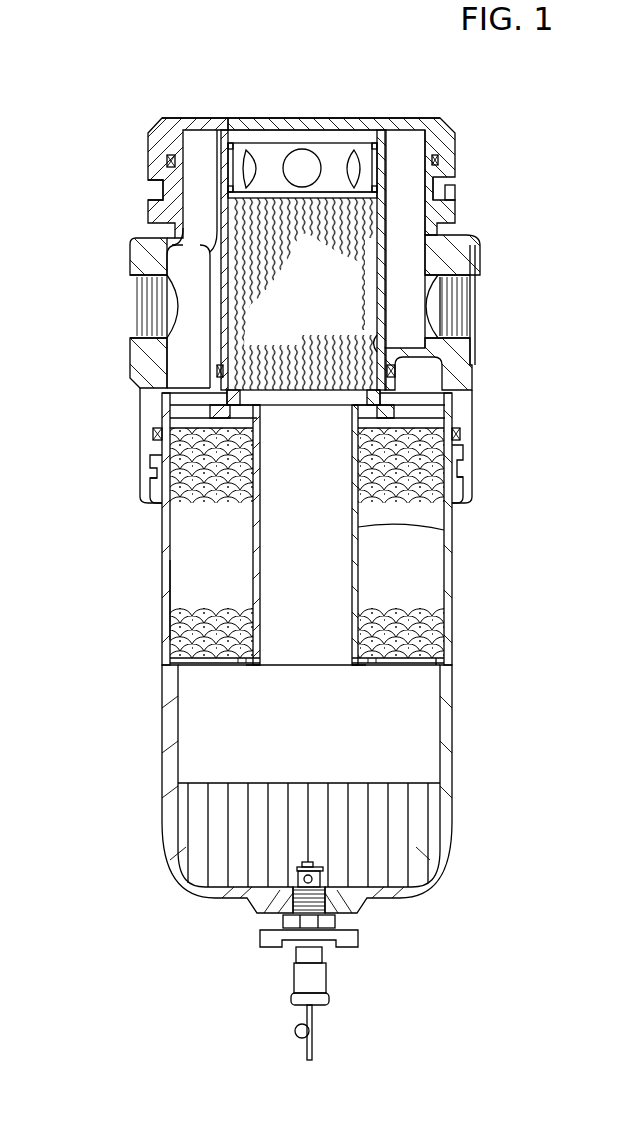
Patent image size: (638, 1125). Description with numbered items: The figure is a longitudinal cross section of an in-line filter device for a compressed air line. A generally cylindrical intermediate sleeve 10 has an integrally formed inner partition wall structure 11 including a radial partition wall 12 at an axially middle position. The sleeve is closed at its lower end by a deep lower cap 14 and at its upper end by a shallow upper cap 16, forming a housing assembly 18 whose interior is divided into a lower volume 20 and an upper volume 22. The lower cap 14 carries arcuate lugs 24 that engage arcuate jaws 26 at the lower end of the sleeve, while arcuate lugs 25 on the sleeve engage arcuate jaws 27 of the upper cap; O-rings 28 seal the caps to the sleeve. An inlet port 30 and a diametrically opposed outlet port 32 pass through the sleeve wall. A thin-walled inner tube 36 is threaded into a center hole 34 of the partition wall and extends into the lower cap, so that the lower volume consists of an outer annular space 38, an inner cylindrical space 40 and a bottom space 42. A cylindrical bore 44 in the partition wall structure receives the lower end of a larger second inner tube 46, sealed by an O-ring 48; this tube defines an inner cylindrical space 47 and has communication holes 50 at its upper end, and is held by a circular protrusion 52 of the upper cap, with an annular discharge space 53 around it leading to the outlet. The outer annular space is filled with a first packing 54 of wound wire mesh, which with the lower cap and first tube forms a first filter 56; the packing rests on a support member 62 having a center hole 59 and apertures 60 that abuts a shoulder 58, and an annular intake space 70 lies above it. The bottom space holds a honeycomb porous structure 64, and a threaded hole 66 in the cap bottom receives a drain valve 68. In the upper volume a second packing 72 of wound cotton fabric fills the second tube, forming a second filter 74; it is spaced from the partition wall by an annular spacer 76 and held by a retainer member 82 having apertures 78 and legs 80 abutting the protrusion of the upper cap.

The intermediate sleeve 10 is at (125, 252).
The inner partition wall structure 11 is at (200, 363).
The radial partition wall 12 is at (160, 405).
The lower cap 14 is at (160, 698).
The upper cap 16 is at (455, 130).
The housing assembly 18 is at (88, 208).
The lower volume 20 is at (405, 720).
The upper volume 22 is at (203, 162).
The arcuate lugs 24 is at (150, 470).
The arcuate lugs 25 is at (163, 188).
The arcuate jaws 26 is at (150, 495).
The arcuate jaws 27 is at (163, 212).
The O-rings 28 is at (440, 165).
The inlet port 30 is at (150, 345).
The outlet port 32 is at (458, 332).
The threaded center hole 34 is at (260, 407).
The inner tube 36 is at (444, 530).
The outer annular space 38 is at (198, 559).
The inner cylindrical space 40 is at (291, 542).
The bottom space 42 is at (296, 757).
The cylindrical bore 44 is at (472, 330).
The second inner tube 46 is at (457, 298).
The inner cylindrical space 47 is at (286, 304).
The O-ring 48 is at (398, 386).
The communication holes 50 is at (230, 147).
The circular protrusion 52 is at (345, 150).
The annular discharge space 53 is at (405, 130).
The first packing 54 is at (430, 605).
The first filter 56 is at (165, 607).
The shoulder 58 is at (172, 658).
The circular center hole 59 is at (260, 660).
The apertures 60 is at (242, 660).
The support member 62 is at (442, 665).
The porous structure 64 is at (398, 778).
The threaded hole 66 is at (262, 898).
The drain valve 68 is at (330, 984).
The annular intake space 70 is at (447, 364).
The second packing 72 is at (136, 292).
The second filter 74 is at (458, 270).
The annular spacer 76 is at (443, 412).
The apertures 78 is at (262, 160).
The legs 80 is at (243, 165).
The retainer member 82 is at (285, 135).